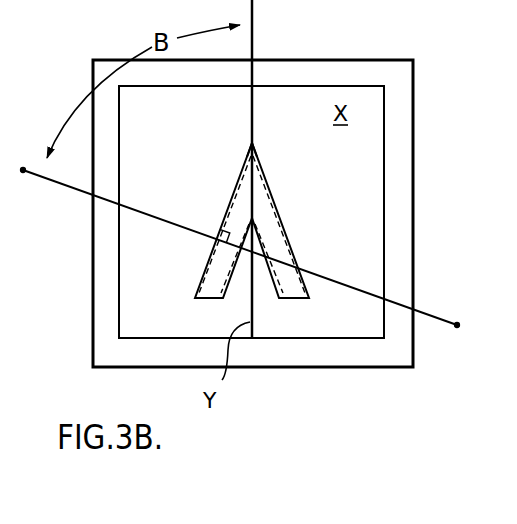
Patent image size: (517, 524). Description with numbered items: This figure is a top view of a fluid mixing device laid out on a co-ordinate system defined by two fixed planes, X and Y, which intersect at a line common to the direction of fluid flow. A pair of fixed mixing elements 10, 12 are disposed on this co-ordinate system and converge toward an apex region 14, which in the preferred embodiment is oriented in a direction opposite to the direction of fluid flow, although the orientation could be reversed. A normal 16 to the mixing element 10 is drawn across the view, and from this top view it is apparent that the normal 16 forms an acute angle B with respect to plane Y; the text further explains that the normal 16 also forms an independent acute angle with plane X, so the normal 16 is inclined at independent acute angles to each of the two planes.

The mixing element 10 is at (207, 267).
The mixing element 12 is at (291, 240).
The apex region 14 is at (253, 142).
The normal 16 is at (50, 182).